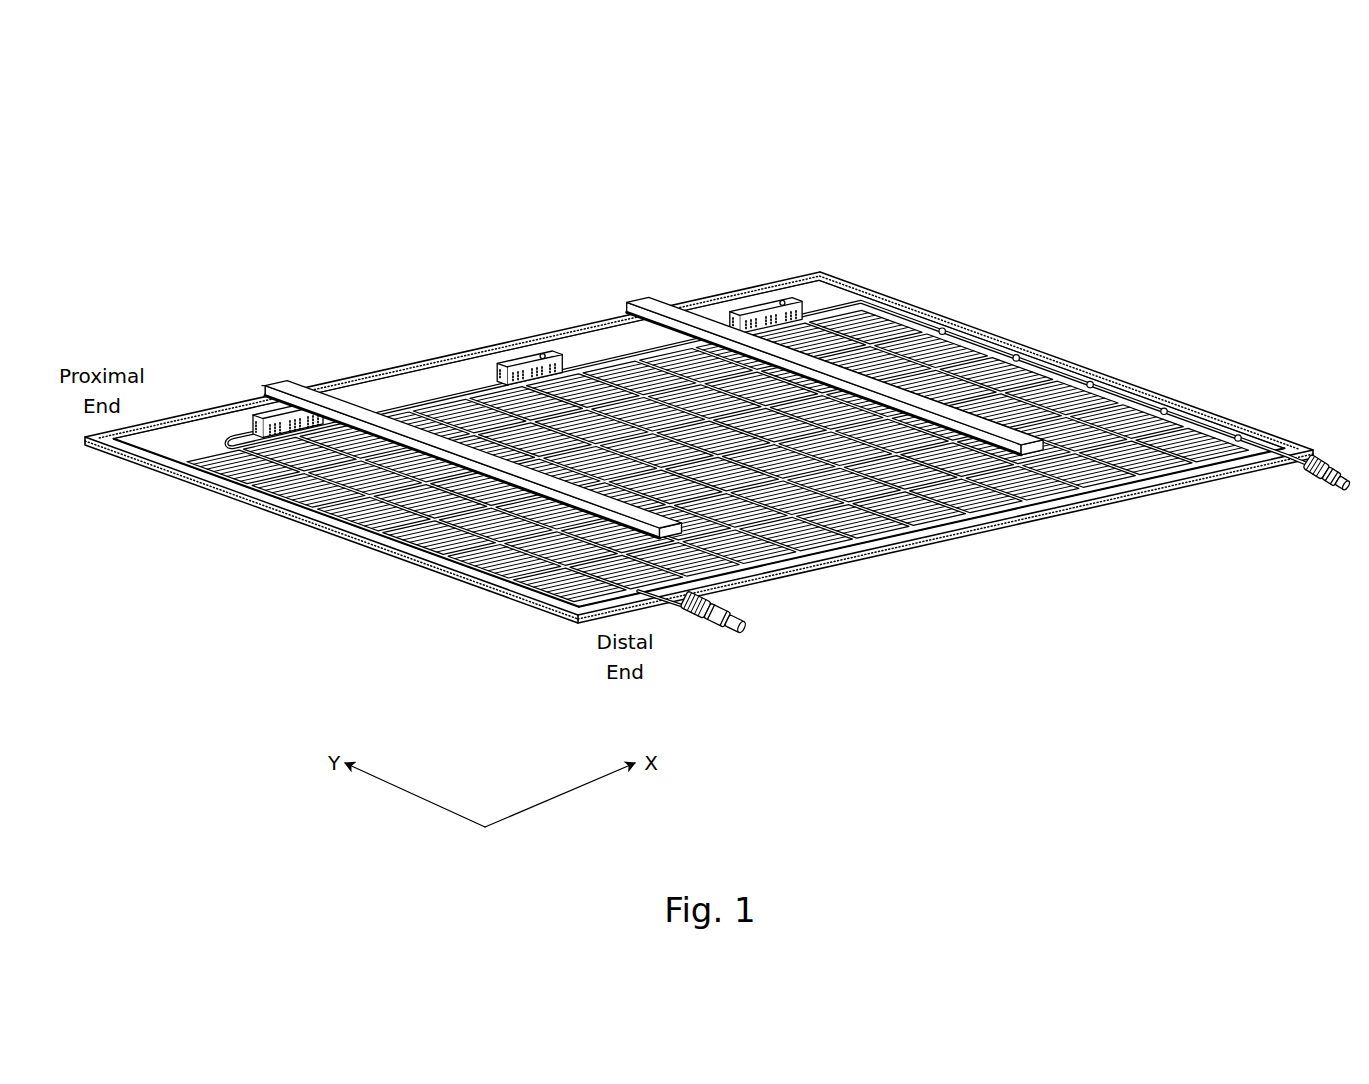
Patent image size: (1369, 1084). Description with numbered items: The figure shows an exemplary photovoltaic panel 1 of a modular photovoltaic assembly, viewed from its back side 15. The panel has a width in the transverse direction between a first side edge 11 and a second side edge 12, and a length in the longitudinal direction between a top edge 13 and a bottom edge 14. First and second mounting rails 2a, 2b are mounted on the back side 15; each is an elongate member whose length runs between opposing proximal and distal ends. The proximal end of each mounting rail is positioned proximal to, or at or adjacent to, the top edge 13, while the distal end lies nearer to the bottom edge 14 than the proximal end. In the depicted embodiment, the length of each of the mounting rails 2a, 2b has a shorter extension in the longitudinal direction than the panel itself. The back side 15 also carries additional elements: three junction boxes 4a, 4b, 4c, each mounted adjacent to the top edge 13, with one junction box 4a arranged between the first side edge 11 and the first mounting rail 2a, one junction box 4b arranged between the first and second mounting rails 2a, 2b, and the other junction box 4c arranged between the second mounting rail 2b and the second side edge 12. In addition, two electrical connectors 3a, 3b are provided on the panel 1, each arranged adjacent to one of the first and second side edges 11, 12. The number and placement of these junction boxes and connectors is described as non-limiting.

The photovoltaic panel 1 is at (940, 157).
The first mounting rail 2a is at (278, 385).
The second mounting rail 2b is at (640, 300).
The electrical connector 3a is at (520, 556).
The electrical connector 3b is at (1165, 415).
The junction box 4a is at (311, 410).
The junction box 4b is at (520, 365).
The junction box 4c is at (790, 305).
The first side edge 11 is at (345, 542).
The second side edge 12 is at (1000, 330).
The top edge 13 is at (690, 300).
The bottom edge 14 is at (1012, 525).
The back side 15 is at (850, 297).